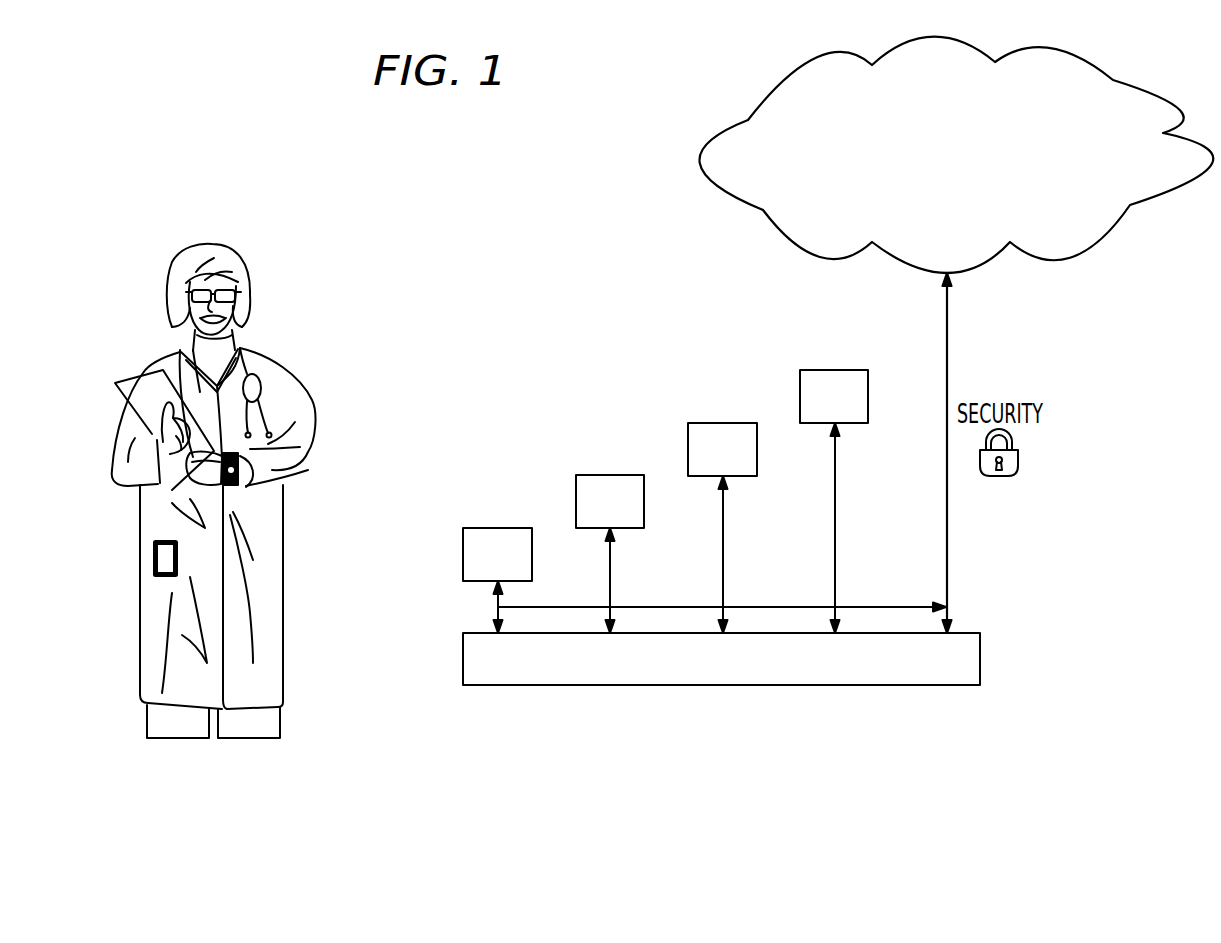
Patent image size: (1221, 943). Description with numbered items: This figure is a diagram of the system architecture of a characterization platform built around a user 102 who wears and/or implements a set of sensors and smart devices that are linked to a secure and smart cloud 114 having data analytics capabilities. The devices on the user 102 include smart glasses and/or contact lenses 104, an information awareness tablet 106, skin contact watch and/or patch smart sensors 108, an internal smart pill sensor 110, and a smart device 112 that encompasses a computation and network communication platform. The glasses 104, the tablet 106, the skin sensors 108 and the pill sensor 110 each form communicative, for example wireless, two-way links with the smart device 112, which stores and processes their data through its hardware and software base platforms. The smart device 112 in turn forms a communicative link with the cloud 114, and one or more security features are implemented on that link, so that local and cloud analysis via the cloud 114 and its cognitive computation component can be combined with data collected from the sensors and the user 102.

The user 102 is at (180, 262).
The smart glasses and/or contact lenses 104 is at (245, 295).
The information awareness tablet 106 is at (186, 387).
The skin contact watch and/or patch smart sensors 108 is at (253, 472).
The internal smart pill sensor 110 is at (241, 512).
The smart device 112 is at (192, 567).
The secure and smart cloud 114 is at (1106, 62).